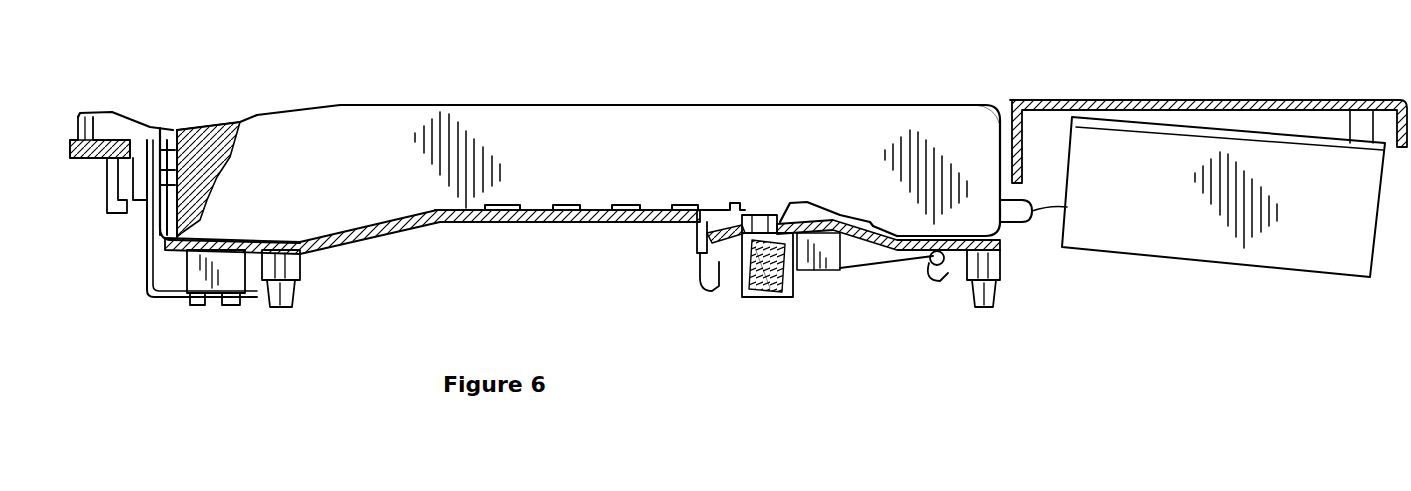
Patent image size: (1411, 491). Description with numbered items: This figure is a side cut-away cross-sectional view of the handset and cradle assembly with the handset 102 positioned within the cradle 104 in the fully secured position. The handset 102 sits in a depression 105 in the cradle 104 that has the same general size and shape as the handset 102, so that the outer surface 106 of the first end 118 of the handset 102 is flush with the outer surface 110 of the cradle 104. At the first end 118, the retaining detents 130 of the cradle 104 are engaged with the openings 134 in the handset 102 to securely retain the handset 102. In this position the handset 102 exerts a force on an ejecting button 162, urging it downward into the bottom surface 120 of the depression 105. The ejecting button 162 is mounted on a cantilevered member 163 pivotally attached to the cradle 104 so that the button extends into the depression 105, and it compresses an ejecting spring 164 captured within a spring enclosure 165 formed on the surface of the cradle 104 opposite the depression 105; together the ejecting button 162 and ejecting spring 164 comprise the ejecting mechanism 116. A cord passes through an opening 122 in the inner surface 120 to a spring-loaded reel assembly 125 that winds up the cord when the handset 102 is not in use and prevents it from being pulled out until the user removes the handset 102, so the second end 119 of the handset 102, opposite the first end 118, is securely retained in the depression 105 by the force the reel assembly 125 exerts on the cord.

The handset 102 is at (600, 132).
The cradle 104 is at (163, 87).
The depression 105 is at (360, 243).
The outer surface 106 is at (428, 104).
The outer surface 110 is at (1105, 102).
The ejecting mechanism 116 is at (818, 204).
The first end 118 is at (257, 116).
The second end 119 is at (978, 126).
The inner surface 120 is at (667, 224).
The opening 122 is at (1035, 226).
The reel assembly 125 is at (1143, 199).
The retaining detents 130 is at (183, 184).
The openings 134 is at (173, 132).
The ejecting button 162 is at (770, 220).
The cantilevered member 163 is at (838, 242).
The ejecting spring 164 is at (768, 296).
The spring enclosure 165 is at (777, 298).